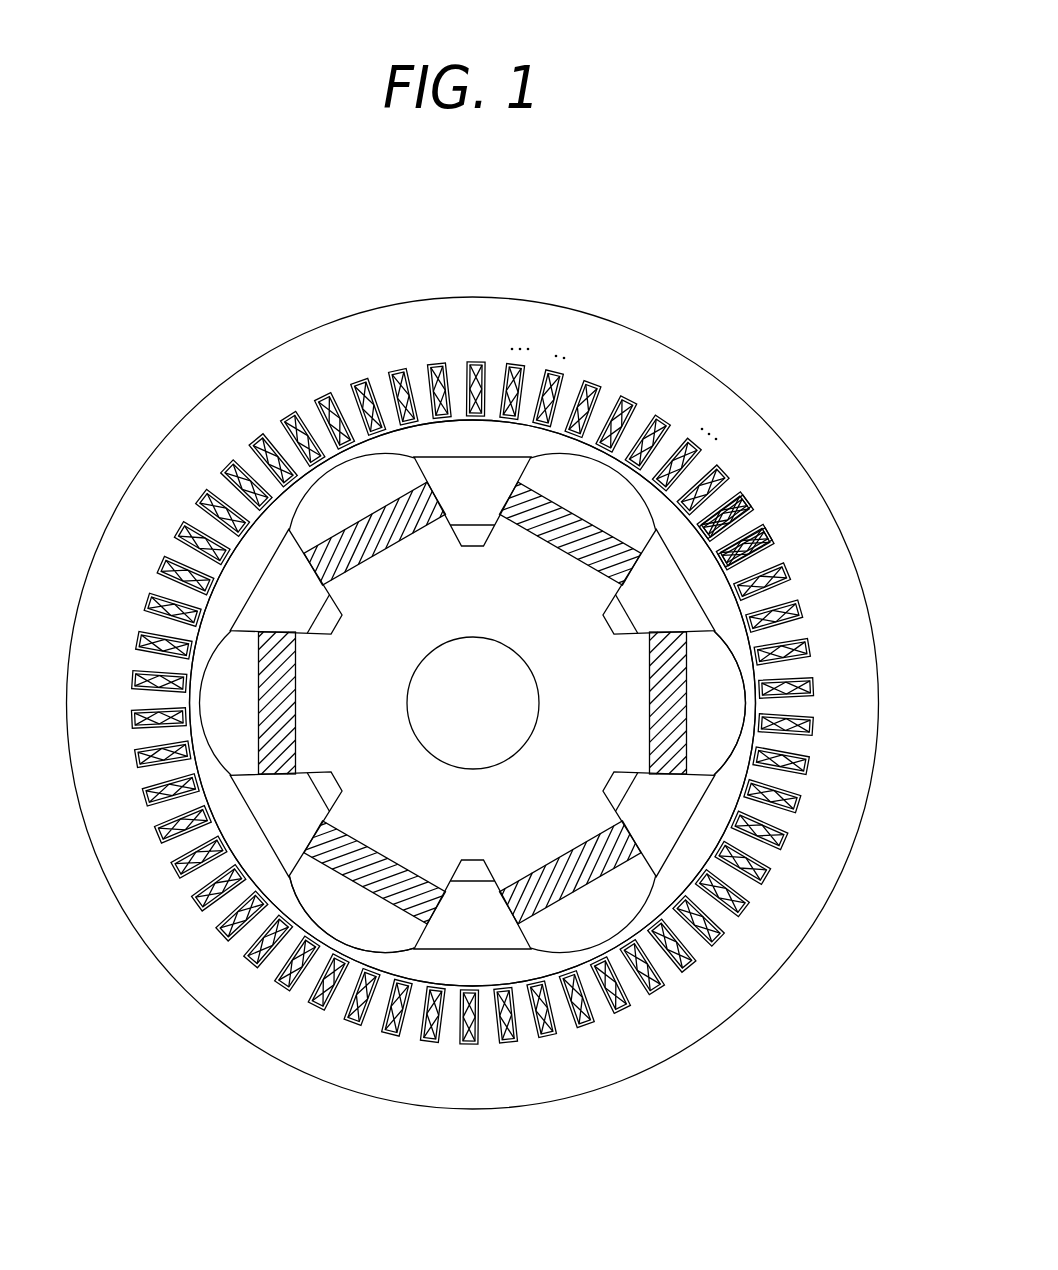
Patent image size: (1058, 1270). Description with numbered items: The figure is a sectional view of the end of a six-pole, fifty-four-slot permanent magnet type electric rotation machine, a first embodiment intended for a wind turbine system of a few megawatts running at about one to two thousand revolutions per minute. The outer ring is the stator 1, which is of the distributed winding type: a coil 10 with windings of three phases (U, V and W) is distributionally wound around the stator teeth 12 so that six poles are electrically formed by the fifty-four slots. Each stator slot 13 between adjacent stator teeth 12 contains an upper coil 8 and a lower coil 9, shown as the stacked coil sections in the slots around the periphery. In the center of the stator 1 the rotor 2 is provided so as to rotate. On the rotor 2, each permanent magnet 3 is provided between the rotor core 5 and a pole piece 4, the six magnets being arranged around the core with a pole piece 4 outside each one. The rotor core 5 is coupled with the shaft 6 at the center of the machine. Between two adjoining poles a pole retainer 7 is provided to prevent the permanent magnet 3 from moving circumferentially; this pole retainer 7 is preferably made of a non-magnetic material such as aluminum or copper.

The stator 1 is at (668, 340).
The rotor 2 is at (647, 905).
The permanent magnet 3 is at (678, 682).
The pole piece 4 is at (710, 742).
The rotor core 5 is at (577, 645).
The shaft 6 is at (480, 747).
The pole retainer 7 is at (277, 832).
The upper coil 8 is at (622, 410).
The lower coil 9 is at (348, 412).
The coil 10 is at (520, 233).
The stator teeth 12 is at (710, 510).
The stator slot 13 is at (770, 530).